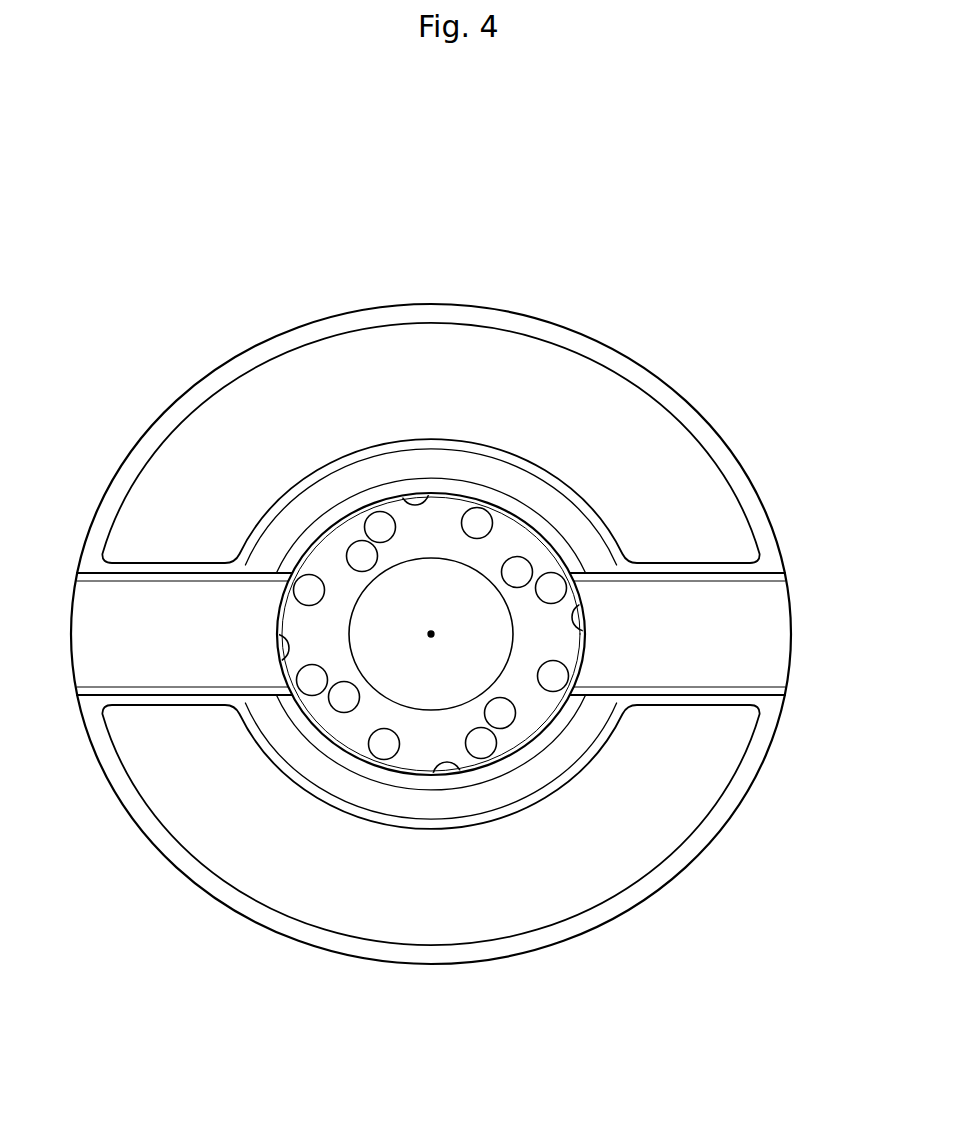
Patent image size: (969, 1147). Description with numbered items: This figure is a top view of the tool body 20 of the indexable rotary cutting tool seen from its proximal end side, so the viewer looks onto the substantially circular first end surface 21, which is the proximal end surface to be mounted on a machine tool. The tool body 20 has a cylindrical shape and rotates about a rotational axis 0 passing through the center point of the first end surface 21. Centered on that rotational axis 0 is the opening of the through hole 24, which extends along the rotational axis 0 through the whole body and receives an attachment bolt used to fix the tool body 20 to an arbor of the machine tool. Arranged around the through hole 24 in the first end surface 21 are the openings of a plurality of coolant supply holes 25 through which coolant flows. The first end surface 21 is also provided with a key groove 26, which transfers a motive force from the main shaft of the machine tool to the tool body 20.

The rotational axis 0 is at (431, 633).
The tool body 20 is at (612, 280).
The first end surface 21 is at (210, 448).
The through hole 24 is at (497, 684).
The coolant supply holes 25 is at (480, 521).
The key groove 26 is at (763, 635).